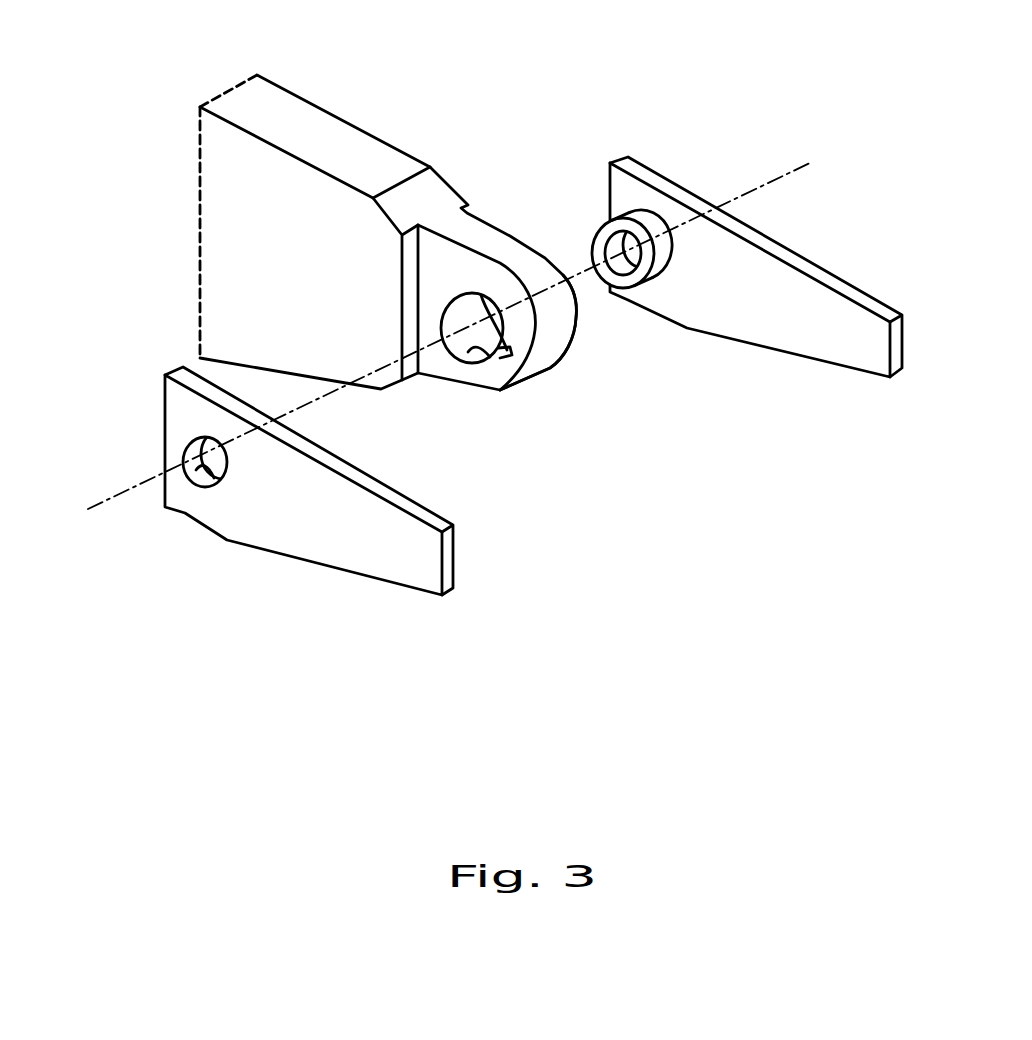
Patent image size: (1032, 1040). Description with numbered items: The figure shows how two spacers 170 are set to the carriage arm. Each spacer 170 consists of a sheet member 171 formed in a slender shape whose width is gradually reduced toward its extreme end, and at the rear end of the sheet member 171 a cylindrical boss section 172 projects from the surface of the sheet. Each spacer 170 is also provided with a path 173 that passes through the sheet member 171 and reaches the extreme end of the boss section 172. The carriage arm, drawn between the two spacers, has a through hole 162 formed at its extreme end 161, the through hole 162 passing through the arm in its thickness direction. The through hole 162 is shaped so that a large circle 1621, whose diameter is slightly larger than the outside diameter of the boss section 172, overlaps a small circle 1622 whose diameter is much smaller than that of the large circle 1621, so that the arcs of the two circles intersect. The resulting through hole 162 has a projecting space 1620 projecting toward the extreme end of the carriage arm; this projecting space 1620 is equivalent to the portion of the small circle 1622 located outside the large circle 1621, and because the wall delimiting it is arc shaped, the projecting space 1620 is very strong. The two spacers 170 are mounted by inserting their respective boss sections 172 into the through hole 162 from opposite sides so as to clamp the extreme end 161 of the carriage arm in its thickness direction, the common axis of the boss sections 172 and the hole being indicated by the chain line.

The extreme end 161 is at (493, 240).
The through hole 162 is at (492, 355).
The projecting space 1620 is at (537, 356).
The large circle 1621 is at (460, 360).
The small circle 1622 is at (504, 358).
The spacer 170 is at (471, 315).
The sheet member 171 is at (815, 267).
The cylindrical boss section 172 is at (598, 237).
The path 173 is at (618, 258).